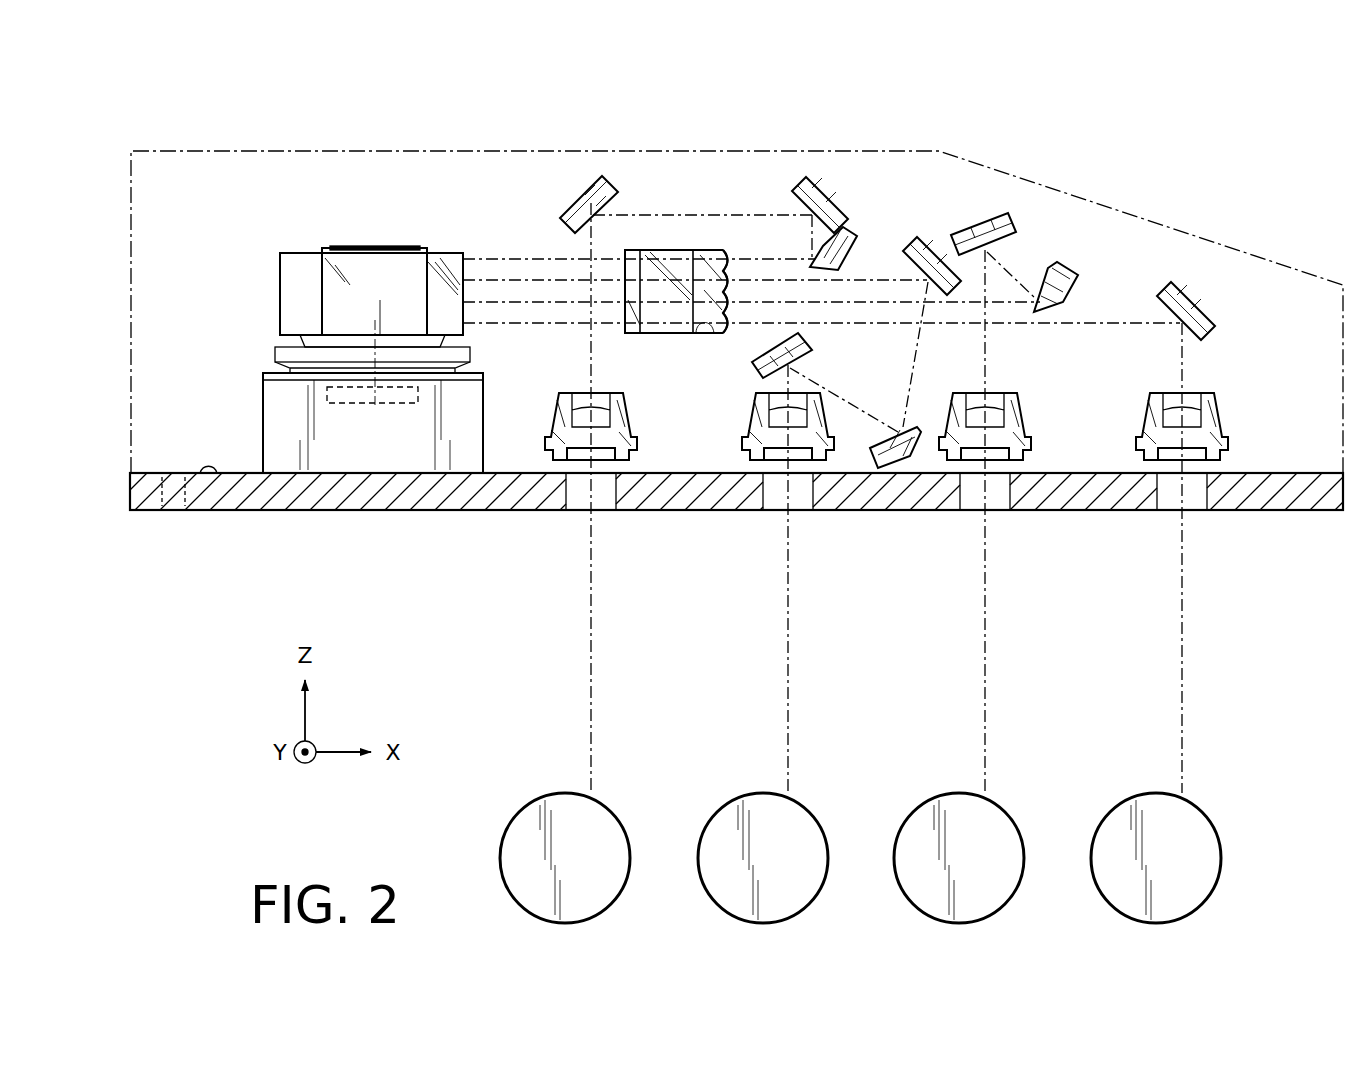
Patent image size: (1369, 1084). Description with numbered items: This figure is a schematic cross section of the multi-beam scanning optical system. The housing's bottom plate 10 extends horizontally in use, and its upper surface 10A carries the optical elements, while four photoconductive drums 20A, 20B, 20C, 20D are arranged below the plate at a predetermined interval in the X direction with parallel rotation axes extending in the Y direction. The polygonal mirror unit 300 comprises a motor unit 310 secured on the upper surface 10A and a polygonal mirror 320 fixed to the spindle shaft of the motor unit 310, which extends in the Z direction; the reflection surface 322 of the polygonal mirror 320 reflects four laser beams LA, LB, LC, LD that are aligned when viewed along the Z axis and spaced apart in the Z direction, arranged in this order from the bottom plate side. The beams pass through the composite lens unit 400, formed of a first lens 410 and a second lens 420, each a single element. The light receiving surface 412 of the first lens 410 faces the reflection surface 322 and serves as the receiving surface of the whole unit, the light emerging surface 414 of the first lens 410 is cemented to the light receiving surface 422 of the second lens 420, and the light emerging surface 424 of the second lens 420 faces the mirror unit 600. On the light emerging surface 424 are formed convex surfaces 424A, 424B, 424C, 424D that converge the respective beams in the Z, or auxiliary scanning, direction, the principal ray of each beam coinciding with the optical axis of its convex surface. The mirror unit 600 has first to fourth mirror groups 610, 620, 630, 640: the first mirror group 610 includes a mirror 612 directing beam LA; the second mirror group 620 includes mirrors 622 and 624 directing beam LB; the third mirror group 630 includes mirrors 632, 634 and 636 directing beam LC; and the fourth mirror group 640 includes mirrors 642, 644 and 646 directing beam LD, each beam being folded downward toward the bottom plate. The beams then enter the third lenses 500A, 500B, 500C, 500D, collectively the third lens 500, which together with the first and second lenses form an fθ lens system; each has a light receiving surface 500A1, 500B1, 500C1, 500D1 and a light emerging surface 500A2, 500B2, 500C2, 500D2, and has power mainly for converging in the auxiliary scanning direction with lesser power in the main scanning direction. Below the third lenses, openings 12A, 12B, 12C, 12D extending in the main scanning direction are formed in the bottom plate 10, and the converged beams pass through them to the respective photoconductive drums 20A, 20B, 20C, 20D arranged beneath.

The bottom plate 10 is at (325, 512).
The upper surface 10A is at (208, 474).
The opening 12A is at (1202, 510).
The opening 12B is at (1005, 510).
The opening 12C is at (804, 510).
The opening 12D is at (606, 510).
The photoconductive drum 20A is at (1129, 800).
The photoconductive drum 20B is at (932, 800).
The photoconductive drum 20C is at (736, 800).
The photoconductive drum 20D is at (538, 800).
The polygonal mirror unit 300 is at (315, 334).
The motor unit 310 is at (268, 398).
The polygonal mirror 320 is at (303, 250).
The reflection surface 322 is at (450, 264).
The composite lens unit 400 is at (695, 245).
The first lens 410 is at (657, 248).
The light receiving surface 412 is at (628, 320).
The light emerging surface 414 is at (704, 318).
The second lens 420 is at (706, 248).
The light receiving surface 422 is at (693, 322).
The light emerging surface 424 is at (728, 248).
The convex surface 424A is at (726, 322).
The convex surface 424B is at (726, 301).
The convex surface 424C is at (726, 279).
The convex surface 424D is at (726, 257).
The third lens 500 is at (902, 475).
The third lens 500A is at (1140, 490).
The light receiving surface 500A1 is at (1159, 422).
The light emerging surface 500A2 is at (1175, 463).
The third lens 500B is at (983, 485).
The light receiving surface 500B1 is at (996, 420).
The light emerging surface 500B2 is at (978, 463).
The third lens 500C is at (745, 491).
The light receiving surface 500C1 is at (762, 422).
The light emerging surface 500C2 is at (781, 463).
The third lens 500D is at (586, 489).
The light receiving surface 500D1 is at (598, 428).
The light emerging surface 500D2 is at (584, 463).
The mirror unit 600 is at (921, 285).
The first mirror group 610 is at (1228, 303).
The mirror 612 is at (1188, 299).
The second mirror group 620 is at (1031, 236).
The mirror 622 is at (1073, 265).
The mirror 624 is at (977, 236).
The third mirror group 630 is at (877, 292).
The mirror 632 is at (922, 246).
The mirror 634 is at (883, 433).
The mirror 636 is at (813, 352).
The fourth mirror group 640 is at (735, 186).
The mirror 642 is at (851, 229).
The mirror 644 is at (828, 194).
The mirror 646 is at (585, 203).
The laser beam LA is at (511, 326).
The laser beam LB is at (562, 304).
The laser beam LC is at (503, 279).
The laser beam LD is at (560, 258).